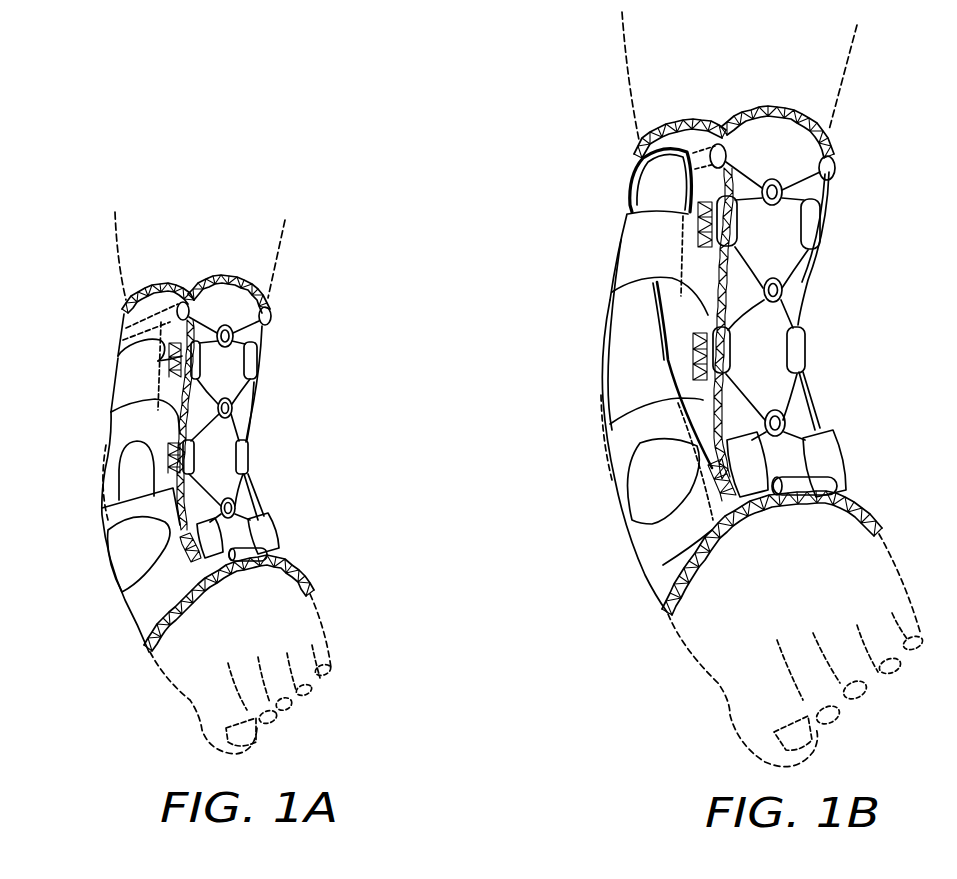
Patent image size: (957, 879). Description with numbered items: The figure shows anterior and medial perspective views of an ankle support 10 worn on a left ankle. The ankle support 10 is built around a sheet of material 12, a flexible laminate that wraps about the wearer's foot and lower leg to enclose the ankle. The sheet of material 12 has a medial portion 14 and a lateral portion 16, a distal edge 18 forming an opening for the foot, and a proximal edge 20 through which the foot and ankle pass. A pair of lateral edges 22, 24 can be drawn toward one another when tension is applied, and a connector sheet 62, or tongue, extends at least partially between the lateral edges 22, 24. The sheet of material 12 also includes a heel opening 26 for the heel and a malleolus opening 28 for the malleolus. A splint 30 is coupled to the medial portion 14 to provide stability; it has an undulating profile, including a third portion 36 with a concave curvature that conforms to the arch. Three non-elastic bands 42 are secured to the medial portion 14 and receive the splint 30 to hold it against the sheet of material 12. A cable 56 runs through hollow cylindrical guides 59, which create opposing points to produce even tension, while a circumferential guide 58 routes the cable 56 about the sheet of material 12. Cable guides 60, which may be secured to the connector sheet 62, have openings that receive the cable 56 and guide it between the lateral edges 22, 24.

In FIG. 1A, the ankle support 10 is at (256, 408).
In FIG. 1B, the ankle support 10 is at (603, 312).
In FIG. 1A, the sheet of material 12 is at (140, 342).
In FIG. 1A, the medial portion 14 is at (117, 458).
In FIG. 1B, the medial portion 14 is at (662, 367).
In FIG. 1A, the lateral portion 16 is at (281, 560).
In FIG. 1B, the lateral portion 16 is at (844, 488).
In FIG. 1A, the distal edge 18 is at (311, 594).
In FIG. 1A, the proximal edge 20 is at (167, 290).
In FIG. 1B, the proximal edge 20 is at (670, 123).
In FIG. 1A, the lateral edge 22 is at (200, 418).
In FIG. 1B, the lateral edge 22 is at (768, 242).
In FIG. 1A, the lateral edge 24 is at (257, 495).
In FIG. 1B, the lateral edge 24 is at (811, 303).
In FIG. 1A, the heel opening 26 is at (116, 447).
In FIG. 1A, the malleolus opening 28 is at (133, 478).
In FIG. 1B, the splint 30 is at (632, 323).
In FIG. 1B, the third portion 36 is at (598, 360).
In FIG. 1A, the non-elastic band 42 is at (130, 385).
In FIG. 1B, the non-elastic band 42 is at (618, 240).
In FIG. 1A, the cable 56 is at (233, 509).
In FIG. 1B, the cable 56 is at (798, 404).
In FIG. 1A, the circumferential guide 58 is at (146, 312).
In FIG. 1B, the circumferential guide 58 is at (688, 155).
In FIG. 1A, the guide 59 is at (248, 458).
In FIG. 1B, the guide 59 is at (796, 348).
In FIG. 1A, the cable guide 60 is at (229, 337).
In FIG. 1B, the cable guide 60 is at (718, 153).
In FIG. 1A, the connector sheet 62 is at (233, 312).
In FIG. 1B, the connector sheet 62 is at (776, 150).